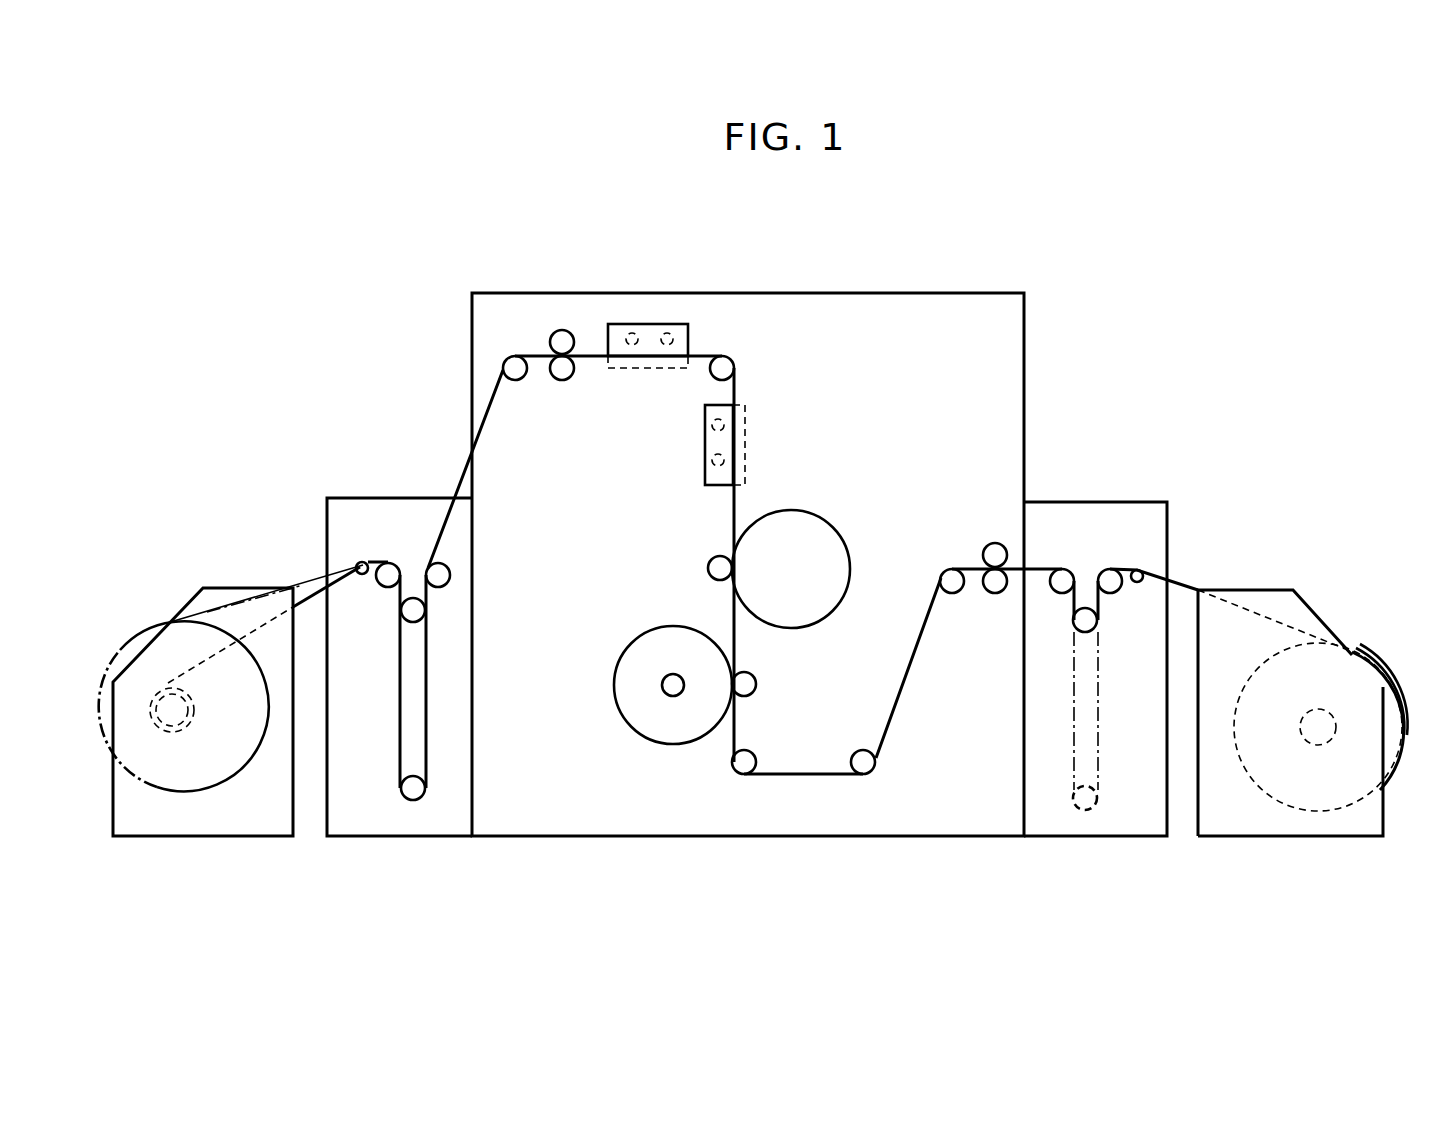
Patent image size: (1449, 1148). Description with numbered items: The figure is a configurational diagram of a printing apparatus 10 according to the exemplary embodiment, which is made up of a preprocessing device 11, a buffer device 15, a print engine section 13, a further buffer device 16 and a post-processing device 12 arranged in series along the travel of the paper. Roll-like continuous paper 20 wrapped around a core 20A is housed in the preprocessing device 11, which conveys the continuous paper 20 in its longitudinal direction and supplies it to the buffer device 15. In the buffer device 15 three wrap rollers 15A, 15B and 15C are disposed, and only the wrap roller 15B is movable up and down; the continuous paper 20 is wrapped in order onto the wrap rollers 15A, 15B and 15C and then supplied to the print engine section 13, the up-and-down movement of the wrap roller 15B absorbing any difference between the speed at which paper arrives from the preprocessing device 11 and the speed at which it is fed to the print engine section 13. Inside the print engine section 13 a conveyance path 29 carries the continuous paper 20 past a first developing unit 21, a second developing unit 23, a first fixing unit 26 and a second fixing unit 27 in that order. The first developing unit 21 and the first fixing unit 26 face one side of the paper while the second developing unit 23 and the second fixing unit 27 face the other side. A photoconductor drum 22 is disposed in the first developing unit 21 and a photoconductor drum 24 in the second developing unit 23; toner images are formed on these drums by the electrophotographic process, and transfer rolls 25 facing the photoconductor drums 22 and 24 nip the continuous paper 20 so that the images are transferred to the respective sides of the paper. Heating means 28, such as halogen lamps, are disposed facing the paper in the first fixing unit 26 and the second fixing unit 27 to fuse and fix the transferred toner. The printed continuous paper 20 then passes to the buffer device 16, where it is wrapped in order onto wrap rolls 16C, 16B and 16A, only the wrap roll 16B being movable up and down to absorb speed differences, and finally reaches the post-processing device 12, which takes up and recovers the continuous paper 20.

The printing apparatus 10 is at (1138, 282).
The preprocessing device 11 is at (1318, 667).
The post-processing device 12 is at (215, 582).
The print engine section 13 is at (1027, 343).
The buffer device 15 is at (1095, 646).
The wrap roller 15A is at (1110, 580).
The wrap roller 15B is at (1088, 622).
The wrap roller 15C is at (1062, 580).
The buffer device 16 is at (431, 603).
The wrap roll 16A is at (388, 572).
The wrap roll 16B is at (410, 612).
The wrap roll 16C is at (440, 582).
The continuous paper 20 is at (1336, 696).
The core 20A is at (1325, 745).
The first developing unit 21 is at (648, 747).
The photoconductor drum 22 is at (628, 716).
The second developing unit 23 is at (832, 525).
The photoconductor drum 24 is at (838, 605).
The transfer roll 25 is at (712, 568).
The first fixing unit 26 is at (703, 470).
The second fixing unit 27 is at (637, 372).
The heating means 28 is at (632, 333).
The conveyance path 29 is at (830, 780).